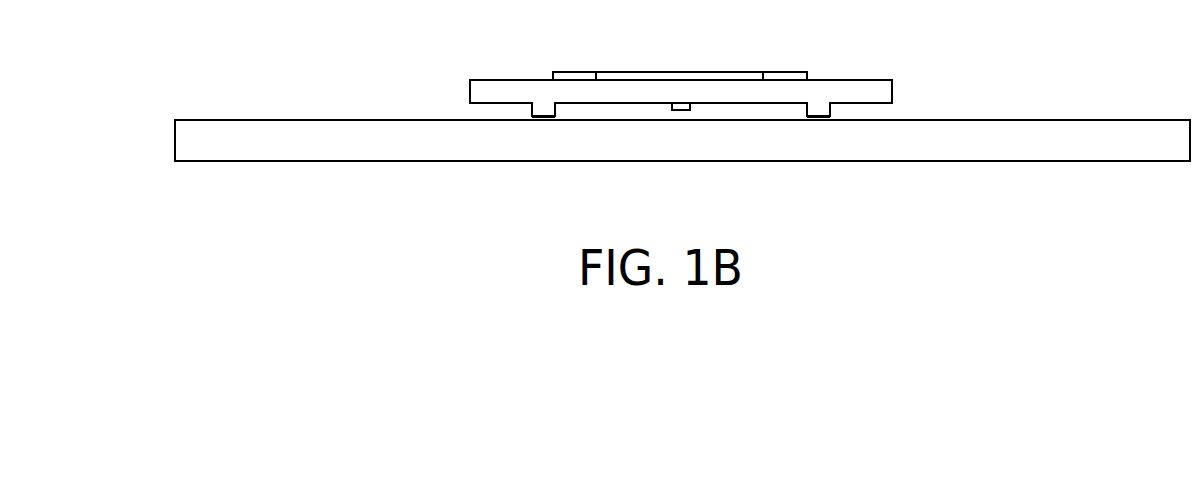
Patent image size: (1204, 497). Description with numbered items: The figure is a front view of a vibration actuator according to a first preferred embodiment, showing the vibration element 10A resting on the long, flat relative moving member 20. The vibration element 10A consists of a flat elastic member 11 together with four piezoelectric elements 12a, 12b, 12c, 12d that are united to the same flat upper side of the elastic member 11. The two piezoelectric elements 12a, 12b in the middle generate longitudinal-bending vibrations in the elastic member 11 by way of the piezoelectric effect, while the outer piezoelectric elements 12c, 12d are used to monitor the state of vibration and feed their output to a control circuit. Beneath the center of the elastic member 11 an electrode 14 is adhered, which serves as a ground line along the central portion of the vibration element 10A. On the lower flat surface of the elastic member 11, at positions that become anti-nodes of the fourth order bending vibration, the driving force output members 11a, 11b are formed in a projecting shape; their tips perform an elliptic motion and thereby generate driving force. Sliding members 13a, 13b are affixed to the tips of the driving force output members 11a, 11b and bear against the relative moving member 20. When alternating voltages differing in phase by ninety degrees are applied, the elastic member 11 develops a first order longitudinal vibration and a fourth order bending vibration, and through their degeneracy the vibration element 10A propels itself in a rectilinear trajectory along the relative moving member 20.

The vibration element 10A is at (894, 78).
The elastic member 11 is at (483, 84).
The driving force output member 11a is at (533, 107).
The driving force output member 11b is at (832, 108).
The piezoelectric element 12a is at (632, 72).
The piezoelectric element 12b is at (722, 72).
The piezoelectric element 12c is at (565, 72).
The piezoelectric element 12d is at (790, 72).
The sliding member 13a is at (540, 122).
The sliding member 13b is at (815, 120).
The electrode 14 is at (679, 112).
The relative moving member 20 is at (259, 153).